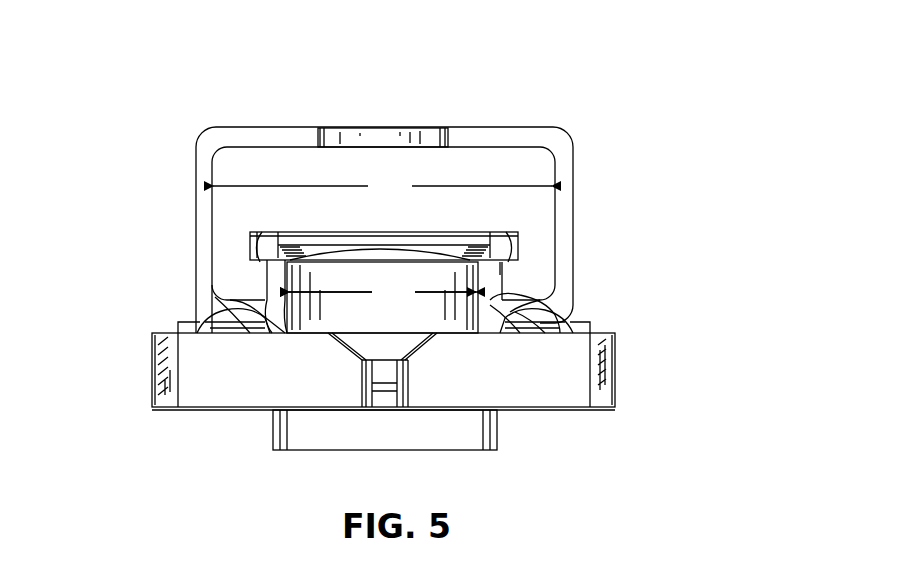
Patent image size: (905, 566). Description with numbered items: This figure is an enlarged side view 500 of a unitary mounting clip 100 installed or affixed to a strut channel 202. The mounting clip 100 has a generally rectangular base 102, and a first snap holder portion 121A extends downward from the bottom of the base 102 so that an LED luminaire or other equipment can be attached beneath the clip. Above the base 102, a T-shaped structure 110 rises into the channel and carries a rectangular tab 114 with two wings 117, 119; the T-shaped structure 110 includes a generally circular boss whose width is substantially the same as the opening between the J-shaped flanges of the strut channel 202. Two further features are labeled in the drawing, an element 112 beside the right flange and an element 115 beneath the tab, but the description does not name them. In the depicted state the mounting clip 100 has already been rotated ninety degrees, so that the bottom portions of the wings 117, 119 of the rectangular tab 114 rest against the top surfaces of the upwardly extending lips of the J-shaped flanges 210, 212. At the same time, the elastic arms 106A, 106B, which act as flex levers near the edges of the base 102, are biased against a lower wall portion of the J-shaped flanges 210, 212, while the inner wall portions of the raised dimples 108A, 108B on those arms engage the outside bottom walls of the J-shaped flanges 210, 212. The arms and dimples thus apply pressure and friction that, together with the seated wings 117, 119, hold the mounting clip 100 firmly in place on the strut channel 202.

The enlarged side view 500 is at (548, 76).
The mounting clip 100 is at (189, 436).
The base 102 is at (565, 395).
The elastic arm 106A is at (195, 322).
The elastic arm 106B is at (565, 325).
The raised dimple structure 108A is at (230, 316).
The raised dimple structure 108B is at (500, 312).
The T-shaped structure 110 is at (262, 320).
The frame 112 is at (525, 300).
The rectangular tab 114 is at (478, 226).
The voice coil 115 is at (510, 268).
The wing 117 is at (264, 226).
The wing 119 is at (504, 226).
The first snap holder portion 121A is at (455, 440).
The strut channel 202 is at (197, 155).
The J-shaped flange 210 is at (250, 320).
The J-shaped flange 212 is at (520, 325).